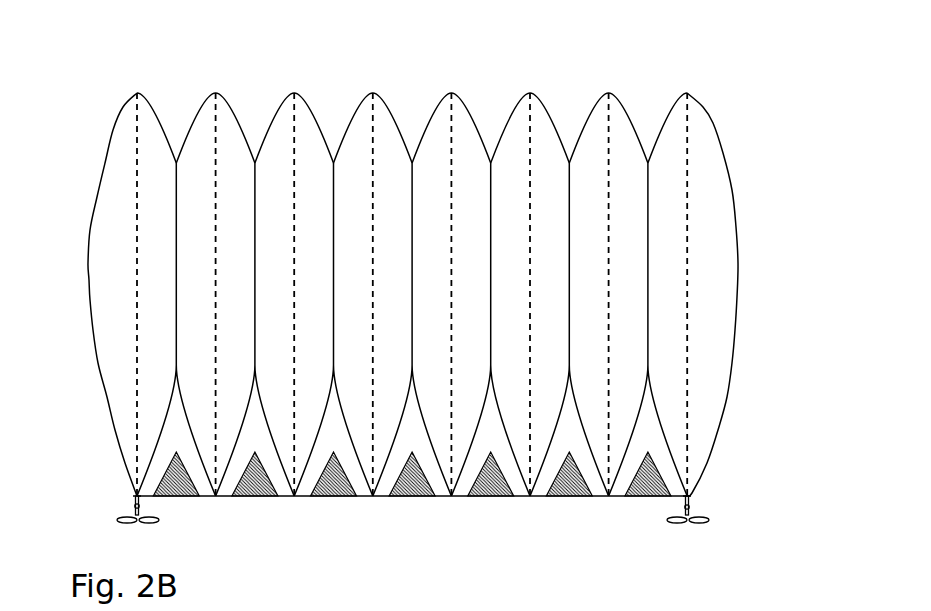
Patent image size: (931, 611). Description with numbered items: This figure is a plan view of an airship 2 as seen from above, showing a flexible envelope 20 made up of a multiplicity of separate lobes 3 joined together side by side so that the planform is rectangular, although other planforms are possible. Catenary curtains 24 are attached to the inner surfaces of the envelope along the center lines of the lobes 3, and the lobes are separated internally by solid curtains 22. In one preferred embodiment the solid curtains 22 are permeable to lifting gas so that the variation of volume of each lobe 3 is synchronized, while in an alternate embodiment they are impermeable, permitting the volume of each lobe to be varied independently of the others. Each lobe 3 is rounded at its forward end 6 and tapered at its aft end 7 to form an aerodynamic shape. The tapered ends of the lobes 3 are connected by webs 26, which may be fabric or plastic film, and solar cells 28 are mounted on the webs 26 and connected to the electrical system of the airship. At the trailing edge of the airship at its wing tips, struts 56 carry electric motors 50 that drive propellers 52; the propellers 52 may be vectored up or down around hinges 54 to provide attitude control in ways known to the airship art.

The airship 2 is at (78, 288).
The lobes 3 is at (362, 98).
The forward end 6 is at (412, 60).
The aft end 7 is at (418, 516).
The envelope 20 is at (713, 240).
The solid curtains 22 is at (569, 203).
The catenary curtains 24 is at (609, 296).
The webs 26 is at (442, 497).
The solar cells 28 is at (246, 497).
The electric motors 50 is at (691, 511).
The propellers 52 is at (673, 523).
The hinges 54 is at (685, 508).
The struts 56 is at (688, 496).